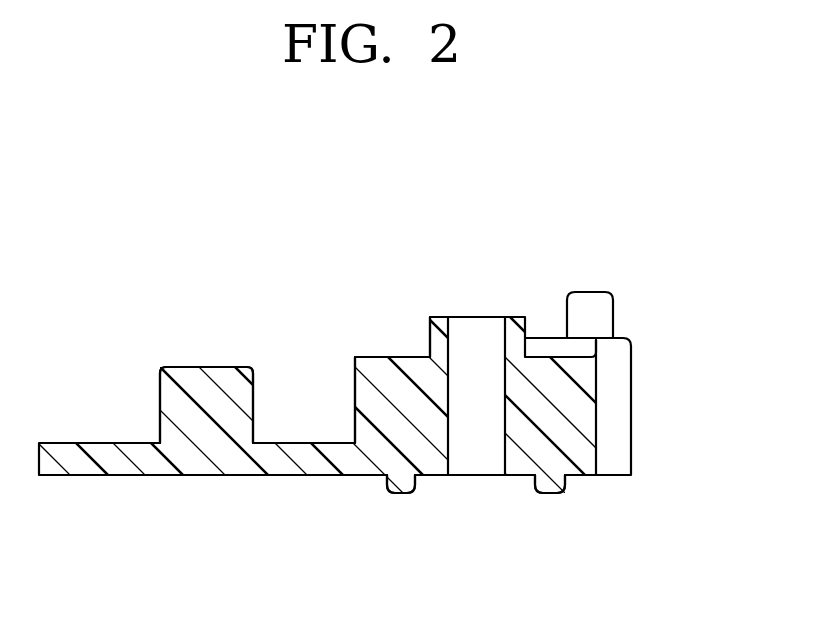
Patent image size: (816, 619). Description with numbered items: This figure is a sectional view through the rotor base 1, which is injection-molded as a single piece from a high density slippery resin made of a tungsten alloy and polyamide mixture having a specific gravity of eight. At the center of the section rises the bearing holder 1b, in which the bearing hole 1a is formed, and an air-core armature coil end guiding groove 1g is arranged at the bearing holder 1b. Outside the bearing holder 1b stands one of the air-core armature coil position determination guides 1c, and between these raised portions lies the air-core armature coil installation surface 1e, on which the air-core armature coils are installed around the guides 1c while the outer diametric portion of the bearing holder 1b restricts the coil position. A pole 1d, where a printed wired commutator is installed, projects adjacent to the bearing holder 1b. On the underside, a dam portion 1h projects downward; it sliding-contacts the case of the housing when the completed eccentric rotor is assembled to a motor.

The rotor base 1 is at (73, 469).
The bearing hole 1a is at (503, 363).
The bearing holder 1b is at (392, 368).
The air-core armature coil position determination guide 1c is at (212, 377).
The pole 1d is at (597, 305).
The air-core armature coil installation surface 1e is at (295, 440).
The air-core armature coil end guiding groove 1g is at (558, 352).
The dam portion 1h is at (400, 494).